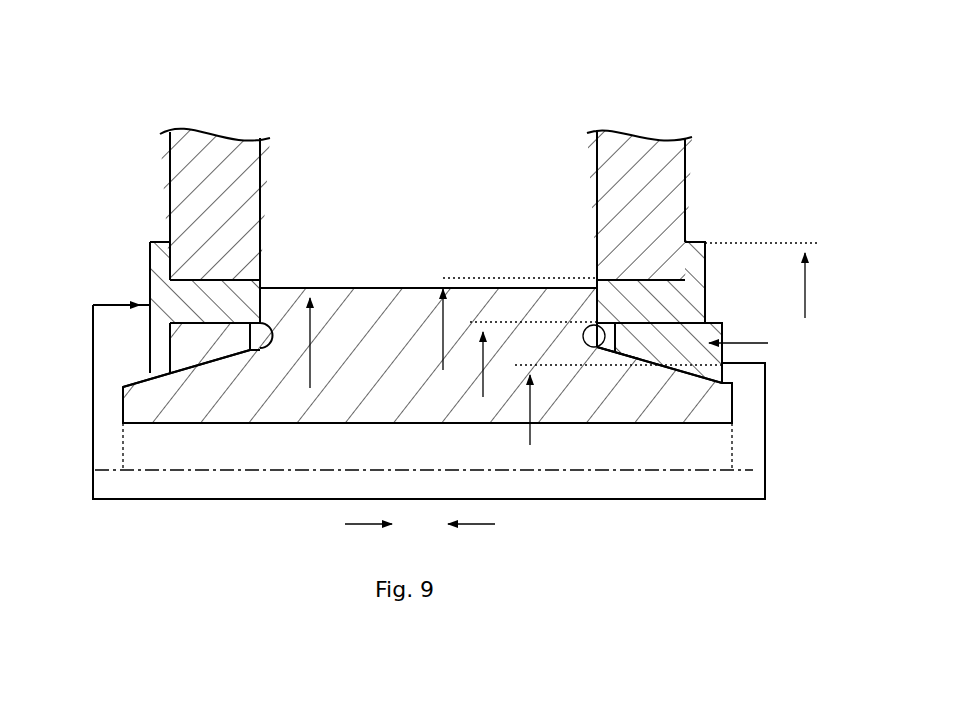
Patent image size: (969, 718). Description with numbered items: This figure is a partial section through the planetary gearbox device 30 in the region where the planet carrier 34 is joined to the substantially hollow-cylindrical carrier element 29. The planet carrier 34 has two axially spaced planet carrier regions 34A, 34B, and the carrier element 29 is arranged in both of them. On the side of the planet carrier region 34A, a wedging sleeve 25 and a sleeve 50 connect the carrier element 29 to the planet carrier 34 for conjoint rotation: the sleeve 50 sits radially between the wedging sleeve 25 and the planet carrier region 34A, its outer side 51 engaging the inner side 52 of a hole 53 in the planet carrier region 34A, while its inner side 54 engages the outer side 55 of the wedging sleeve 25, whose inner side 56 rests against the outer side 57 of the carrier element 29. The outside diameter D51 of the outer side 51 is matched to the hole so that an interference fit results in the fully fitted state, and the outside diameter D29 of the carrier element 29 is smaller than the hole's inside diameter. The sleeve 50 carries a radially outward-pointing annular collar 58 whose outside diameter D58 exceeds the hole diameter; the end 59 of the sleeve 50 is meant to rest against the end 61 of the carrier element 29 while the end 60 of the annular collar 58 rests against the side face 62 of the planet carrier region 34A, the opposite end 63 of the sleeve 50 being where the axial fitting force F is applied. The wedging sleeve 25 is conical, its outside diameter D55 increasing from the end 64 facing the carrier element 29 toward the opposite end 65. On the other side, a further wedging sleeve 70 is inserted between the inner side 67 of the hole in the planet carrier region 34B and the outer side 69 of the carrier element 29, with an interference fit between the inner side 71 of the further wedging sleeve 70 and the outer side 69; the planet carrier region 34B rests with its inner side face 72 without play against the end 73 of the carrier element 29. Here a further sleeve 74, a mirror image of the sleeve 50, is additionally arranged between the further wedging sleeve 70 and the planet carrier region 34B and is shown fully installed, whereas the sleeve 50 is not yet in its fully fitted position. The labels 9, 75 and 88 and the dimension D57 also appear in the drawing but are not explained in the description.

The shaft 9 is at (225, 470).
The wedging sleeve 25 is at (670, 388).
The carrier element 29 is at (345, 254).
The planetary gearbox device 30 is at (767, 112).
The planet carrier 34 is at (418, 178).
The planet carrier region 34A is at (608, 130).
The further planet carrier region 34B is at (197, 130).
The sleeve 50 is at (720, 268).
The outer side of the sleeve 51 is at (603, 270).
The inner side of the hole 52 is at (612, 272).
The hole 53 is at (742, 311).
The inner side of the sleeve 54 is at (722, 328).
The outer side of the wedging sleeve 55 is at (712, 320).
The inner side of the wedging sleeve 56 is at (697, 387).
The outer side of the carrier element 57 is at (724, 384).
The annular collar 58 is at (707, 246).
The end of the sleeve 59 is at (588, 325).
The end of the annular collar 60 is at (704, 230).
The end of the carrier element 61 is at (590, 345).
The side face of the planet carrier region 62 is at (688, 160).
The end of the sleeve 63 is at (712, 262).
The end of the wedging sleeve 64 is at (606, 348).
The end of the wedging sleeve 65 is at (724, 350).
The inner side of the hole 67 is at (262, 285).
The outer side of the carrier element 69 is at (134, 381).
The further wedging sleeve 70 is at (155, 349).
The inner side of the further wedging sleeve 71 is at (222, 368).
The inner side face of the planet carrier region 72 is at (262, 178).
The end of the carrier element 73 is at (242, 278).
The further sleeve 74 is at (134, 232).
The bottom surface of housing 75 is at (258, 499).
The gap 88 is at (120, 278).
The fitting force F is at (746, 342).
The outside diameter of the carrier element D29 is at (308, 384).
The outside diameter of the sleeve D51 is at (423, 287).
The outside diameter of the wedging sleeve D55 is at (483, 380).
The dimension D56 D57 is at (525, 440).
The outside diameter of the annular collar D58 is at (808, 290).